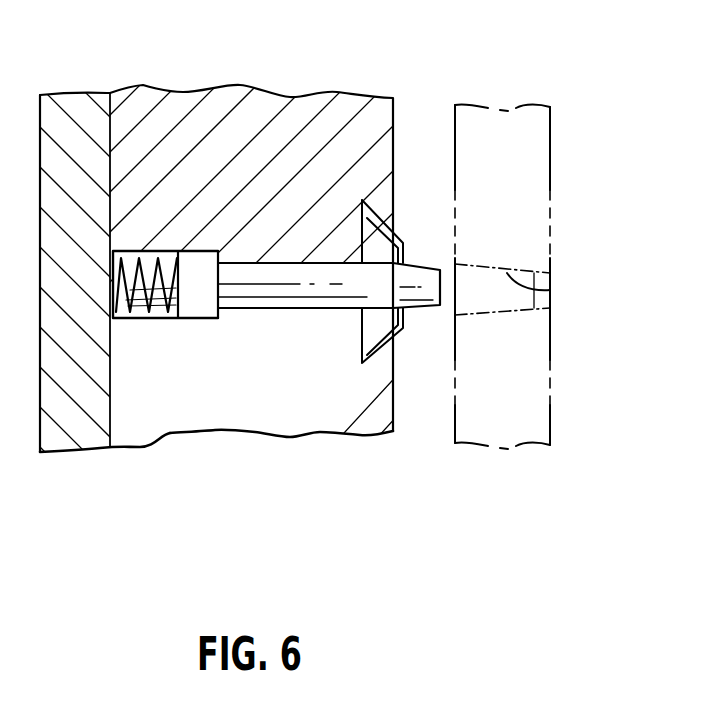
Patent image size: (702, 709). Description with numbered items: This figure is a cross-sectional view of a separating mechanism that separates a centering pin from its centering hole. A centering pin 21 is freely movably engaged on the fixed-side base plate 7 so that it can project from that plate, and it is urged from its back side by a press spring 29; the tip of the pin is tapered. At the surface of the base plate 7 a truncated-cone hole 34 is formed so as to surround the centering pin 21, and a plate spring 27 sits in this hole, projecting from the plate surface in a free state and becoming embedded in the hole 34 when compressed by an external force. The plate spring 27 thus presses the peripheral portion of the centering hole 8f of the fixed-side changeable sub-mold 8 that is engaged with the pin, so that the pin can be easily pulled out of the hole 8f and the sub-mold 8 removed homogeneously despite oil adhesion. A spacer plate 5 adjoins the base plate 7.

The spacer plate 5 is at (73, 410).
The fixed-side base plate 7 is at (172, 120).
The fixed-side changeable sub-mold 8 is at (502, 392).
The centering hole 8f is at (553, 288).
The centering pin 21 is at (285, 277).
The plate spring 27 is at (400, 233).
The press spring 29 is at (142, 317).
The truncated-cone hole 34 is at (362, 322).